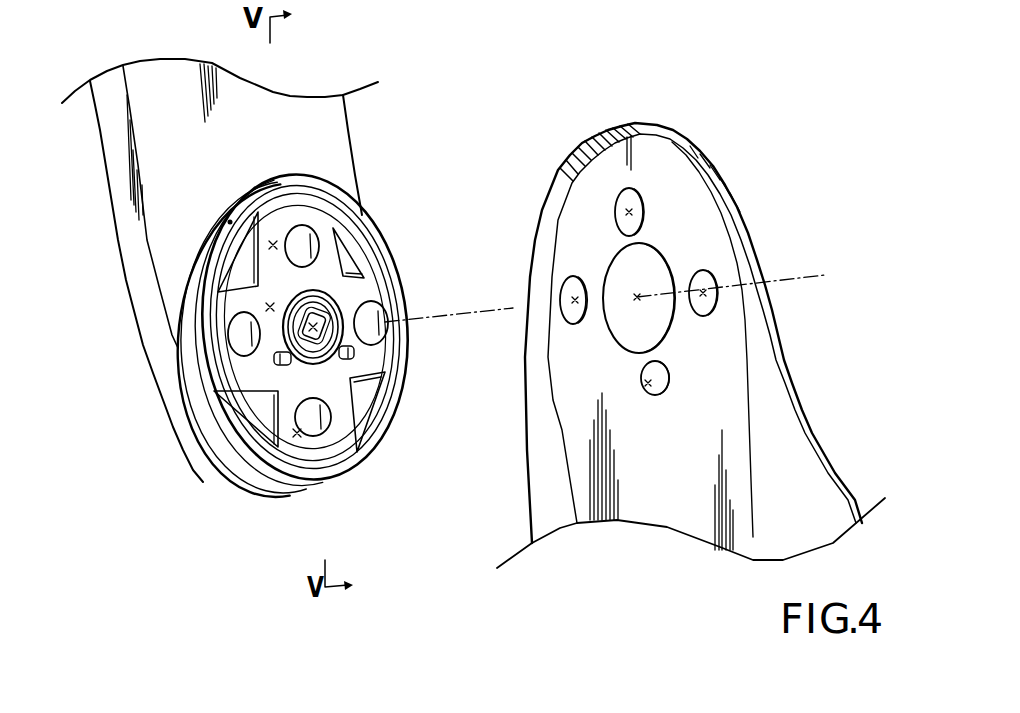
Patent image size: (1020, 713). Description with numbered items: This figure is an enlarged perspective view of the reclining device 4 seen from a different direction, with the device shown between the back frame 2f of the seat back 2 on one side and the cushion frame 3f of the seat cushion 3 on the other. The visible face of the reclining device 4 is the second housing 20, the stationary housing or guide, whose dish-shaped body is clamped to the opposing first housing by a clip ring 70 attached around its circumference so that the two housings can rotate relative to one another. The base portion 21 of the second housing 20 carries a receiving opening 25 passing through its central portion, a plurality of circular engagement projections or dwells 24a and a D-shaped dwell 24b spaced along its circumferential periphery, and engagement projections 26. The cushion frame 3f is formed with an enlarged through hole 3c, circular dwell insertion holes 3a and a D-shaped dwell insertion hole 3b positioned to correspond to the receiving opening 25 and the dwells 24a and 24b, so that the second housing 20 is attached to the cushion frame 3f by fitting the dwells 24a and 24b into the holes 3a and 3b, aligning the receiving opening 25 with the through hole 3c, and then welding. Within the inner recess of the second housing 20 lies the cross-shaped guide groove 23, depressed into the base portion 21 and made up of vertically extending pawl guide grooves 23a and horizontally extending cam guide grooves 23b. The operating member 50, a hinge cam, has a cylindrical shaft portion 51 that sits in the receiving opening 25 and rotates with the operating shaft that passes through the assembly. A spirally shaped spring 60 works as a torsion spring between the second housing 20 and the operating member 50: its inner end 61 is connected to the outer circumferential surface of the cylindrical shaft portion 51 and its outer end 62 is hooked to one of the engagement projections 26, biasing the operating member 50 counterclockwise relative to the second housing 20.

The seat back 2 is at (220, 249).
The back frame 2f is at (173, 101).
The seat cushion 3 is at (691, 331).
The cushion frame 3f is at (691, 331).
The circular dwell insertion holes 3a is at (576, 296).
The D-shaped dwell insertion hole 3b is at (651, 384).
The enlarged through hole 3c is at (639, 296).
The reclining device 4 is at (337, 215).
The second housing 20 is at (439, 340).
The base portion 21 is at (439, 340).
The cross-shaped guide groove 23 is at (245, 340).
The pawl guide grooves 23a is at (273, 240).
The cam guide grooves 23b is at (266, 304).
The circular engagement projections 24a is at (305, 248).
The D-shaped engagement projection 24b is at (325, 420).
The receiving opening 25 is at (340, 308).
The engagement projections 26 is at (285, 372).
The operating member 50 is at (251, 290).
The cylindrical shaft portion 51 is at (251, 290).
The spring 60 is at (326, 282).
The inner end 61 is at (338, 306).
The outer end 62 is at (360, 363).
The clip ring 70 is at (230, 221).